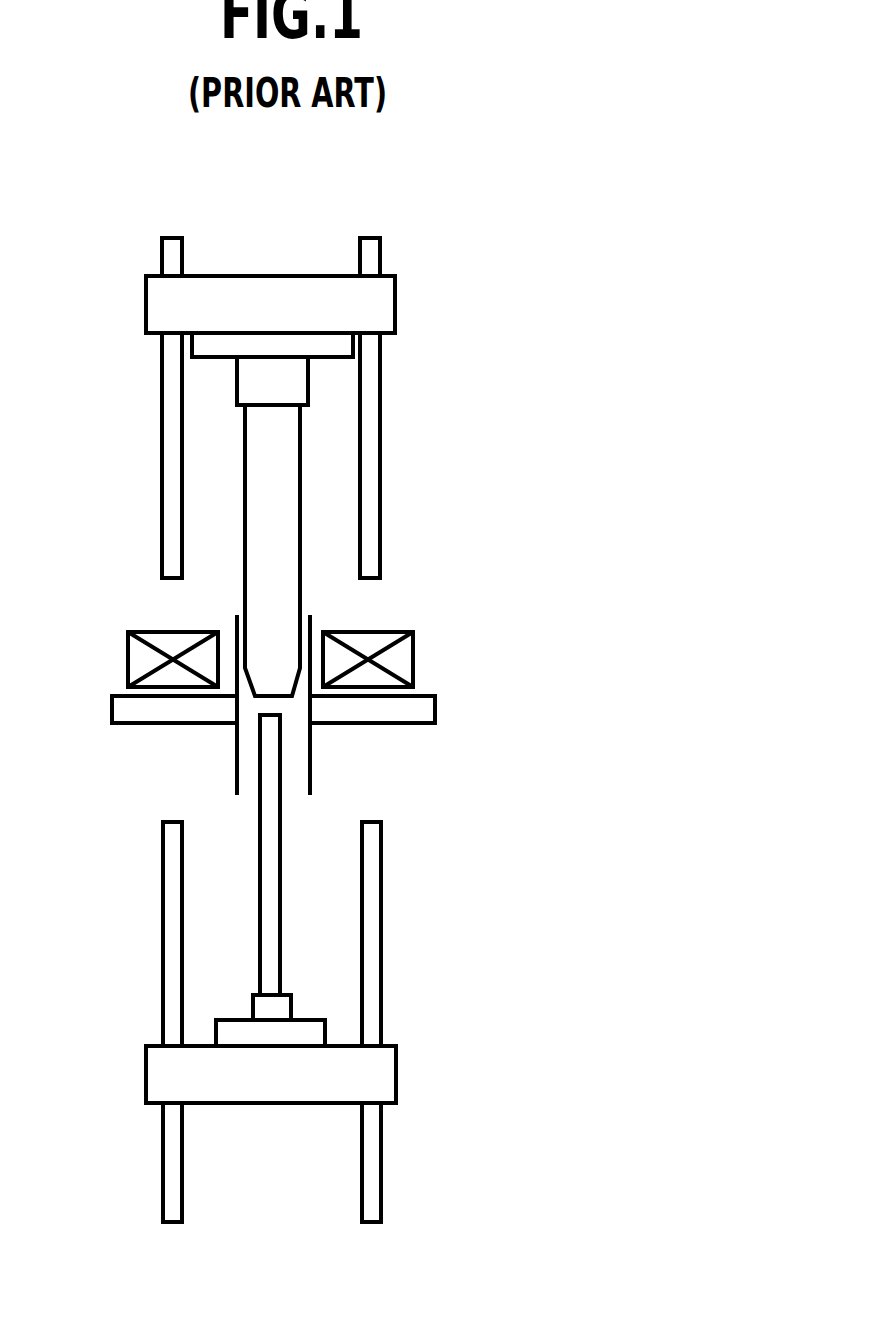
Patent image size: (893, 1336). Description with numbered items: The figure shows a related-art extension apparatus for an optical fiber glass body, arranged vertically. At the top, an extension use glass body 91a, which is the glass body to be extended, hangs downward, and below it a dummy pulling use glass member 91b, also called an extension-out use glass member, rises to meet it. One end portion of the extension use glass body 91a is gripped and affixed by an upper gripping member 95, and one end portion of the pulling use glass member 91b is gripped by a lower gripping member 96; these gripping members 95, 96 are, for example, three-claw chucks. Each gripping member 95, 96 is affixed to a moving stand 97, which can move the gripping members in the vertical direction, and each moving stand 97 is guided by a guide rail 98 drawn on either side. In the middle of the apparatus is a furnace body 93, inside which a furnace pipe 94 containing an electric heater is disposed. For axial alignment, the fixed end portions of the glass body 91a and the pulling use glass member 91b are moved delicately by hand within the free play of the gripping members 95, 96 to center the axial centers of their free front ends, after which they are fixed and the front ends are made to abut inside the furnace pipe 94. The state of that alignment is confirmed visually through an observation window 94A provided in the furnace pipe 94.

The extension use glass body 91a is at (283, 483).
The dummy pulling use glass member 91b is at (282, 892).
The furnace body 93 is at (405, 662).
The furnace pipe 94 is at (318, 622).
The observation window 94A is at (422, 712).
The gripping member 95 is at (297, 385).
The gripping member 96 is at (285, 998).
The moving stand 97 is at (395, 291).
The guide rail 98 is at (372, 418).